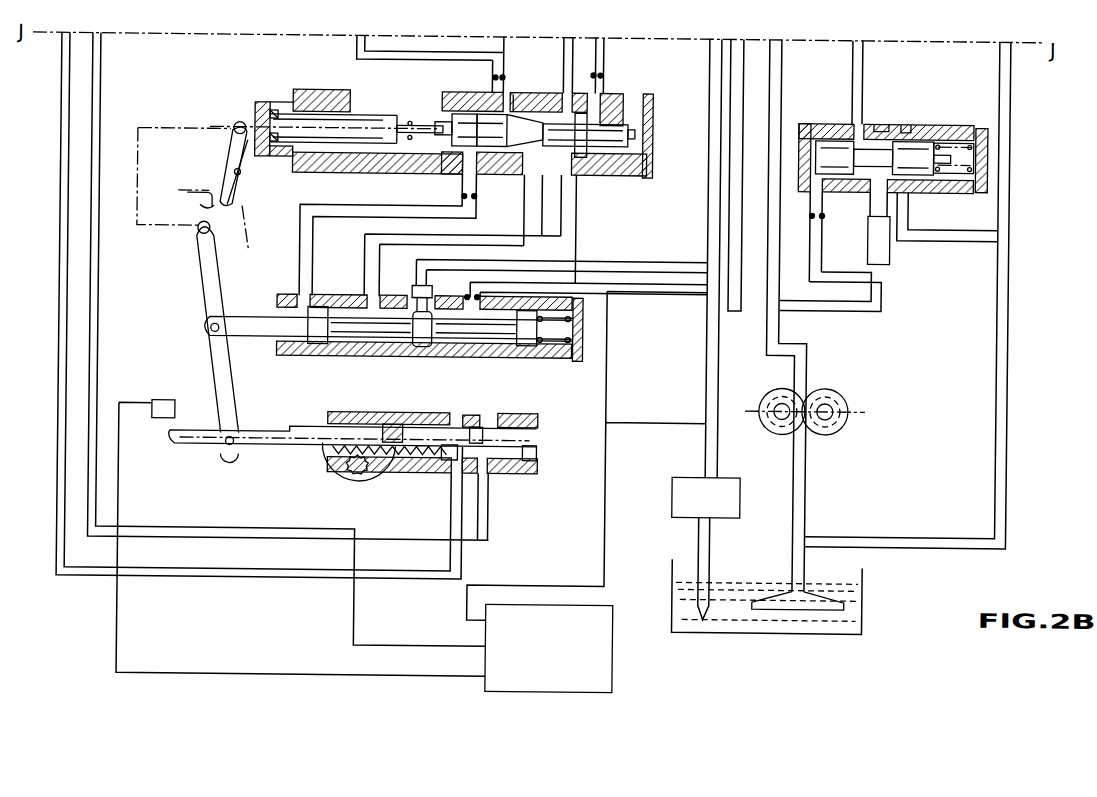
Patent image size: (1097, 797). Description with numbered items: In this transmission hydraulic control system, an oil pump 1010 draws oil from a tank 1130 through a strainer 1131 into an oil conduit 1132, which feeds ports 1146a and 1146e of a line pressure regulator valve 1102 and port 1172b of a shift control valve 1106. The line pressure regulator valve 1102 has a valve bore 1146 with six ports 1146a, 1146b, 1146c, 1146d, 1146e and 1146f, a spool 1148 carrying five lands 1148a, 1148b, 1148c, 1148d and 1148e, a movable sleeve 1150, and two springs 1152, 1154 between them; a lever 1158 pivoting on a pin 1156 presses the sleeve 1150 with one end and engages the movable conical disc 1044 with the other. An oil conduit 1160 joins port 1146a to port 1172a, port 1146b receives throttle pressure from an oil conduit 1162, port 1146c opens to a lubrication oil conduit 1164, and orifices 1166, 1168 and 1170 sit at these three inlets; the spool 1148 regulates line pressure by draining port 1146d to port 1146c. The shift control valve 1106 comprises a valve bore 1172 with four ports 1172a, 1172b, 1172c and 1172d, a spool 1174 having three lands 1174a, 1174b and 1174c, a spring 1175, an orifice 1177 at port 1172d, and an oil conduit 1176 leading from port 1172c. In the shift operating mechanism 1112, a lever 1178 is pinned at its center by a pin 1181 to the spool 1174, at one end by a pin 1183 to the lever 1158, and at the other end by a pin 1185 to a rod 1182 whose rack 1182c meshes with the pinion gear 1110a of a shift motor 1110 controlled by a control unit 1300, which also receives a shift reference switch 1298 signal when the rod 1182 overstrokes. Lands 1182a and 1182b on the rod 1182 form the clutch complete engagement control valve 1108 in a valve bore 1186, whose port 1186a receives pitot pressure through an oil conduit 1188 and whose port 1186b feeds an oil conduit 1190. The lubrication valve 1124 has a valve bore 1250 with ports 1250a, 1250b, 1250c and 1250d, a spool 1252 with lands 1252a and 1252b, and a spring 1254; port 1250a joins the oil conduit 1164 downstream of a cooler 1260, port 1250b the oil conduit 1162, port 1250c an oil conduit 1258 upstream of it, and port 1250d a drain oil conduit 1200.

The oil pump 1010 is at (826, 384).
The movable conical disc 1044 is at (240, 253).
The line pressure regulator valve 1102 is at (687, 257).
The shift control valve 1106 is at (513, 369).
The clutch complete engagement control valve 1108 is at (498, 484).
The shift motor 1110 is at (313, 487).
The pinion gear 1110a is at (355, 480).
The shift operating mechanism 1112 is at (199, 341).
The lubrication valve 1124 is at (894, 111).
The tank 1130 is at (865, 619).
The strainer 1131 is at (806, 606).
The oil conduit 1132 is at (779, 64).
The valve bore 1146 is at (527, 95).
The port 1146a is at (459, 189).
The port 1146b is at (496, 202).
The port 1146c is at (571, 235).
The port 1146d is at (559, 184).
The port 1146e is at (642, 234).
The port 1146f is at (632, 174).
The spool 1148 is at (651, 121).
The land 1148a is at (459, 112).
The land 1148b is at (490, 78).
The land 1148c is at (510, 95).
The land 1148d is at (598, 75).
The land 1148e is at (630, 94).
The sleeve 1150 is at (264, 105).
The spring 1152 is at (353, 95).
The spring 1154 is at (362, 122).
The pin 1156 is at (237, 193).
The lever 1158 is at (250, 168).
The oil conduit 1160 is at (338, 236).
The oil conduit 1162 is at (353, 49).
The oil conduit 1164 is at (702, 64).
The orifice 1166 is at (458, 199).
The orifice 1168 is at (497, 47).
The orifice 1170 is at (569, 50).
The valve bore 1172 is at (298, 359).
The port 1172a is at (300, 361).
The port 1172b is at (364, 362).
The port 1172c is at (430, 360).
The port 1172d is at (468, 360).
The spool 1174 is at (262, 321).
The land 1174a is at (316, 306).
The land 1174b is at (417, 322).
The land 1174c is at (545, 330).
The spring 1175 is at (560, 362).
The oil conduit 1176 is at (693, 244).
The orifice 1177 is at (468, 283).
The lever 1178 is at (214, 357).
The pin 1181 is at (211, 327).
The rod 1182 is at (313, 476).
The land 1182a is at (447, 446).
The land 1182b is at (529, 451).
The rack 1182c is at (382, 474).
The pin 1183 is at (233, 128).
The pin 1185 is at (221, 452).
The valve bore 1186 is at (539, 429).
The port 1186a is at (453, 500).
The port 1186b is at (514, 476).
The oil conduit 1188 is at (215, 584).
The oil conduit 1190 is at (97, 73).
The oil conduit 1200 is at (883, 534).
The valve bore 1250 is at (983, 126).
The port 1250a is at (810, 121).
The port 1250b is at (855, 121).
The port 1250c is at (877, 123).
The port 1250d is at (905, 124).
The spool 1252 is at (948, 160).
The land 1252a is at (828, 171).
The land 1252b is at (904, 192).
The spring 1254 is at (940, 189).
The oil conduit 1258 is at (868, 220).
The cooler 1260 is at (888, 258).
The shift reference switch 1298 is at (161, 403).
The control unit 1300 is at (616, 688).